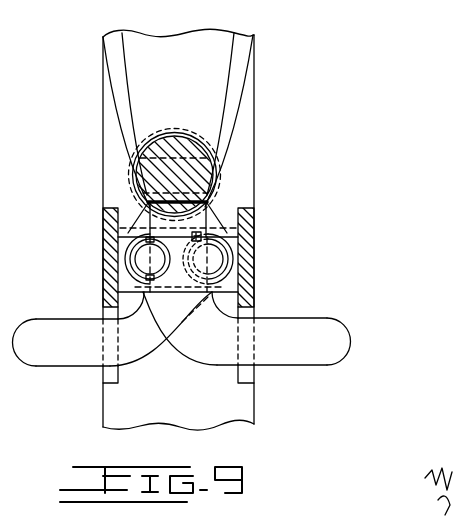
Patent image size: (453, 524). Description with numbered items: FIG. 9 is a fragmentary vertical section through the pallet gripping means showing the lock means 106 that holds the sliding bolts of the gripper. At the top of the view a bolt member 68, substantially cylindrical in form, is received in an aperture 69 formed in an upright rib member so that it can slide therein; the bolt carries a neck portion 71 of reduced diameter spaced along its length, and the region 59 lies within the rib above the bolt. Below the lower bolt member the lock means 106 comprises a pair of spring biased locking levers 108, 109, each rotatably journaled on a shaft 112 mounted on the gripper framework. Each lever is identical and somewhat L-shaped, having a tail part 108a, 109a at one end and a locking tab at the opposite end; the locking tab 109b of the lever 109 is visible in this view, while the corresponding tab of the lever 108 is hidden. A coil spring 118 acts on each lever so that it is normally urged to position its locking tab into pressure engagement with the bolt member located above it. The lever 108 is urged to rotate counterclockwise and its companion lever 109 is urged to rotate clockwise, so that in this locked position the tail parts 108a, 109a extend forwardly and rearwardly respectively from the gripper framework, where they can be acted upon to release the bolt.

The passage 59 is at (208, 61).
The neck portion 71 is at (157, 133).
The aperture 69 is at (173, 134).
The bolt member 68 is at (219, 188).
The locking tab 109b is at (208, 203).
The lock means 106 is at (92, 208).
The shaft 112 is at (103, 242).
The coil spring 118 is at (127, 262).
The locking lever 108 is at (78, 342).
The tail part 108a is at (25, 355).
The locking lever 109 is at (291, 314).
The tail part 109a is at (335, 325).